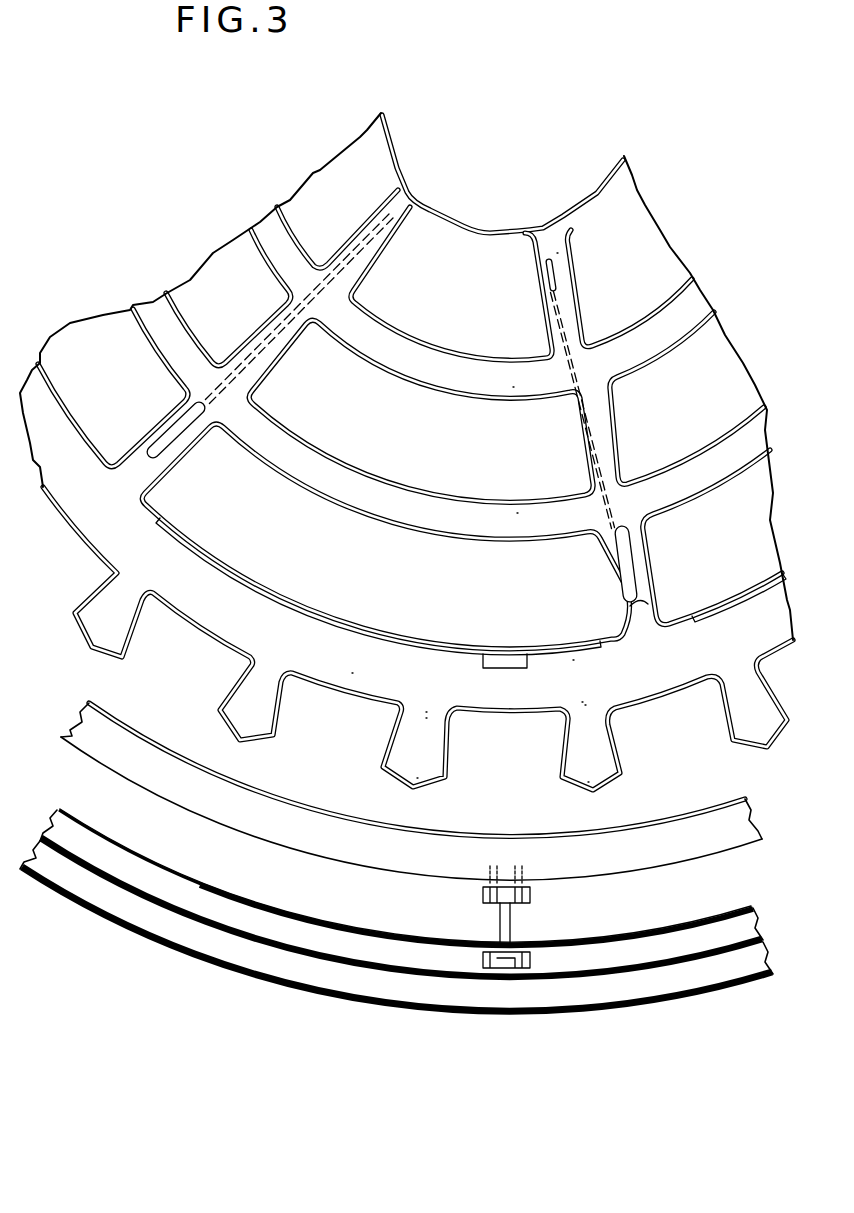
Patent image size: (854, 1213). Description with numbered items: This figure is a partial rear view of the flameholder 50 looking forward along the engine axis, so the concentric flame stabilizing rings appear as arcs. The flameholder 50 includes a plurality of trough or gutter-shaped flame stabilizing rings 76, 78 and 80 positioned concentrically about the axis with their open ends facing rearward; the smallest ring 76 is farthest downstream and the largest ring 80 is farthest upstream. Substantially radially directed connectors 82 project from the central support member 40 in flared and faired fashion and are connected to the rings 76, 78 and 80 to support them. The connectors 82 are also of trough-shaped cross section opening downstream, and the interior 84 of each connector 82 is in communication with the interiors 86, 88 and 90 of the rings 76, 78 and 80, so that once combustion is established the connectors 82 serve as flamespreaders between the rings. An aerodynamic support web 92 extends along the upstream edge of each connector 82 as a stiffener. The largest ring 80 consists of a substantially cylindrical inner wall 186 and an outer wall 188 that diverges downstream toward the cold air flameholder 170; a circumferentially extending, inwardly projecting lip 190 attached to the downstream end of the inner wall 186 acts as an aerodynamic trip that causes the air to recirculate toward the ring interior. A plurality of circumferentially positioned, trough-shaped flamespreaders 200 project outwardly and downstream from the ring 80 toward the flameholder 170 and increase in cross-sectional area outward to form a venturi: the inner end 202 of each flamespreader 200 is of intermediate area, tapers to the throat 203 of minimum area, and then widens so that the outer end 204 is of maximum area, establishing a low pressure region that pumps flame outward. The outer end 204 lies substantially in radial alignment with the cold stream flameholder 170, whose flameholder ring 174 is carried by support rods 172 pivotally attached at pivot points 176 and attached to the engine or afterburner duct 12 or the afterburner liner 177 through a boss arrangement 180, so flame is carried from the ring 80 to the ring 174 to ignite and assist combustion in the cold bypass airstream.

The engine or afterburner case or duct 12 is at (677, 993).
The support member 40 is at (488, 224).
The flameholder 50 is at (629, 325).
The flame stabilizing ring 76 is at (461, 352).
The flame stabilizing ring 78 is at (358, 474).
The flame stabilizing ring 80 is at (277, 593).
The connector 82 is at (280, 348).
The interior of connector 84 is at (558, 253).
The interior of ring 86 is at (513, 388).
The interior of ring 88 is at (517, 513).
The interior of ring 90 is at (573, 660).
The aerodynamic support web 92 is at (372, 246).
The flameholder 170 is at (506, 841).
The support rod 172 is at (500, 923).
The flameholder ring 174 is at (572, 838).
The pivot point 176 is at (533, 893).
The afterburner liner 177 is at (610, 977).
The boss arrangement 180 is at (531, 957).
The inner wall 186 is at (458, 648).
The outer wall 188 is at (352, 673).
The lip 190 is at (377, 628).
The flamespreader 200 is at (396, 745).
The inner end 202 is at (426, 712).
The throat 203 is at (426, 718).
The outer end 204 is at (417, 778).